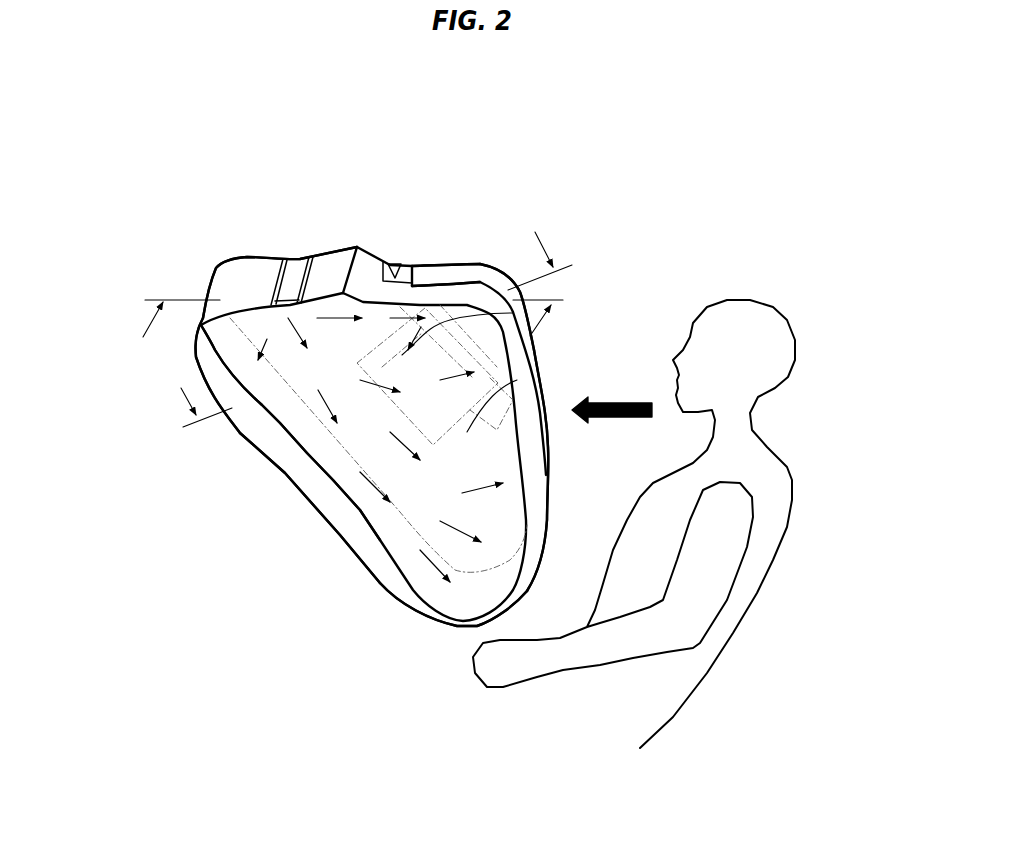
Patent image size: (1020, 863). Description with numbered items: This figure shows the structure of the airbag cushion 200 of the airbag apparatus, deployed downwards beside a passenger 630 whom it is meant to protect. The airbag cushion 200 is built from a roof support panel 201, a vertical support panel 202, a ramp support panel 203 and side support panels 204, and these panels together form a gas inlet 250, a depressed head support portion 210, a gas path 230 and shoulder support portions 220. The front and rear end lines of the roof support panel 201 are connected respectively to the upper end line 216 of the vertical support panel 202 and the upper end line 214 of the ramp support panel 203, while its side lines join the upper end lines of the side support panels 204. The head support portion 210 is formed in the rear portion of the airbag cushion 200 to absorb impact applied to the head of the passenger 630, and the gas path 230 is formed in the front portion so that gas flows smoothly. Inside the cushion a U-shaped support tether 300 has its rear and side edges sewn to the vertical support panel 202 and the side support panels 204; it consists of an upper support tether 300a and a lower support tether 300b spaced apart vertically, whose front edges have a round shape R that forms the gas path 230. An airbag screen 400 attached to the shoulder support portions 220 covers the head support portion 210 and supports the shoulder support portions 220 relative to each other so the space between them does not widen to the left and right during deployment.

The airbag cushion 200 is at (214, 225).
The roof support panel 201 is at (212, 293).
The vertical support panel 202 is at (548, 497).
The ramp support panel 203 is at (292, 481).
The side support panels 204 is at (472, 606).
The head support portion 210 is at (390, 263).
The upper end line of the ramp support panel 214 is at (202, 324).
The upper end line of the vertical support panel 216 is at (347, 267).
The shoulder support portions 220 is at (463, 295).
The gas path 230 is at (287, 385).
The gas inlet 250 is at (292, 272).
The support tether 300 is at (690, 293).
The upper support tether 300a is at (513, 313).
The lower support tether 300b is at (517, 380).
The airbag screen 400 is at (443, 278).
The passenger 630 is at (747, 570).
The round shape R is at (352, 402).